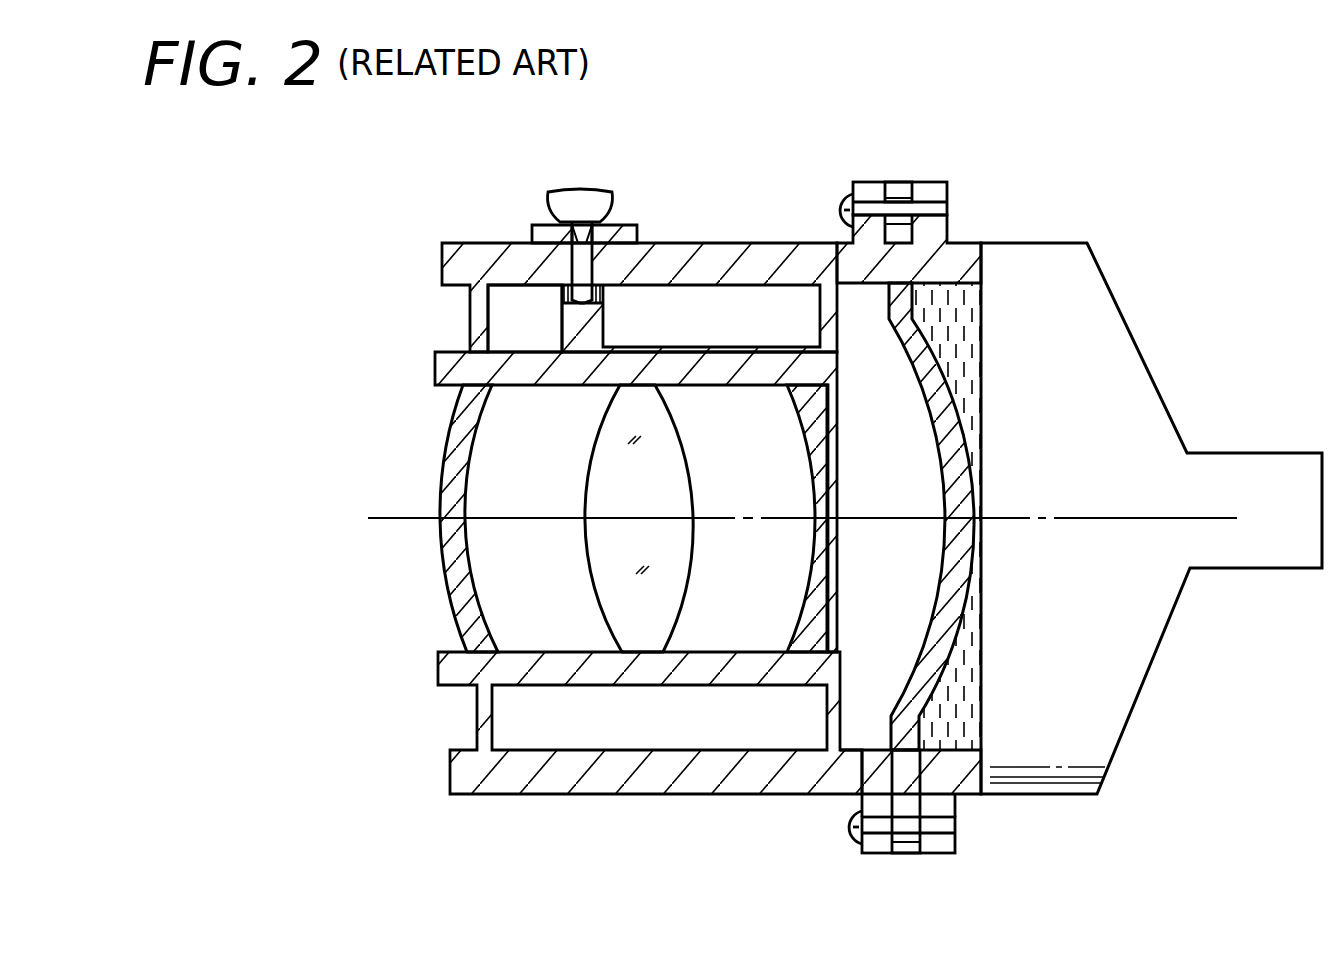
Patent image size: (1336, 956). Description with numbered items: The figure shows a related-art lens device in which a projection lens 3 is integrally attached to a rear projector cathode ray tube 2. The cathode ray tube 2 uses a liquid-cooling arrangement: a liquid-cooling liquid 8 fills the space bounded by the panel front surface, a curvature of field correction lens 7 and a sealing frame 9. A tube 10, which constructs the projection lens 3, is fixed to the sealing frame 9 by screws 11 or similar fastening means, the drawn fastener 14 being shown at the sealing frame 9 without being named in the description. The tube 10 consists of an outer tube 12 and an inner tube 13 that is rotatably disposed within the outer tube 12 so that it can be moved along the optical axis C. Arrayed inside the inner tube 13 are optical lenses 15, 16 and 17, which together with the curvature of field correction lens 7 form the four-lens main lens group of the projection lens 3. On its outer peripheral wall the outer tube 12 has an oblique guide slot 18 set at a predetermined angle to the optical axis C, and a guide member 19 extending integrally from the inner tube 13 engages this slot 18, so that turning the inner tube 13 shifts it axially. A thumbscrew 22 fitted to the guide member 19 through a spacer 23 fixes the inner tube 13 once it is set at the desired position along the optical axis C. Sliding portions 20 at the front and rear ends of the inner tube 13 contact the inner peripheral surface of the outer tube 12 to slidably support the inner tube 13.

The cathode ray tube 2 is at (1123, 697).
The projection lens 3 is at (396, 485).
The curvature of field correction lens 7 is at (932, 390).
The liquid-cooling liquid 8 is at (967, 717).
The sealing frame 9 is at (977, 243).
The tube 10 is at (322, 255).
The screws 11 is at (843, 196).
The outer tube 12 is at (442, 268).
The inner tube 13 is at (435, 375).
The fastening bolt 14 is at (898, 182).
The optical lens 15 is at (443, 578).
The optical lens 16 is at (605, 568).
The optical lens 17 is at (820, 568).
The oblique guide slot 18 is at (562, 298).
The guide member 19 is at (597, 305).
The sliding portions 20 is at (477, 715).
The thumbscrew 22 is at (598, 200).
The spacer 23 is at (628, 225).
The optical axis C is at (1237, 518).